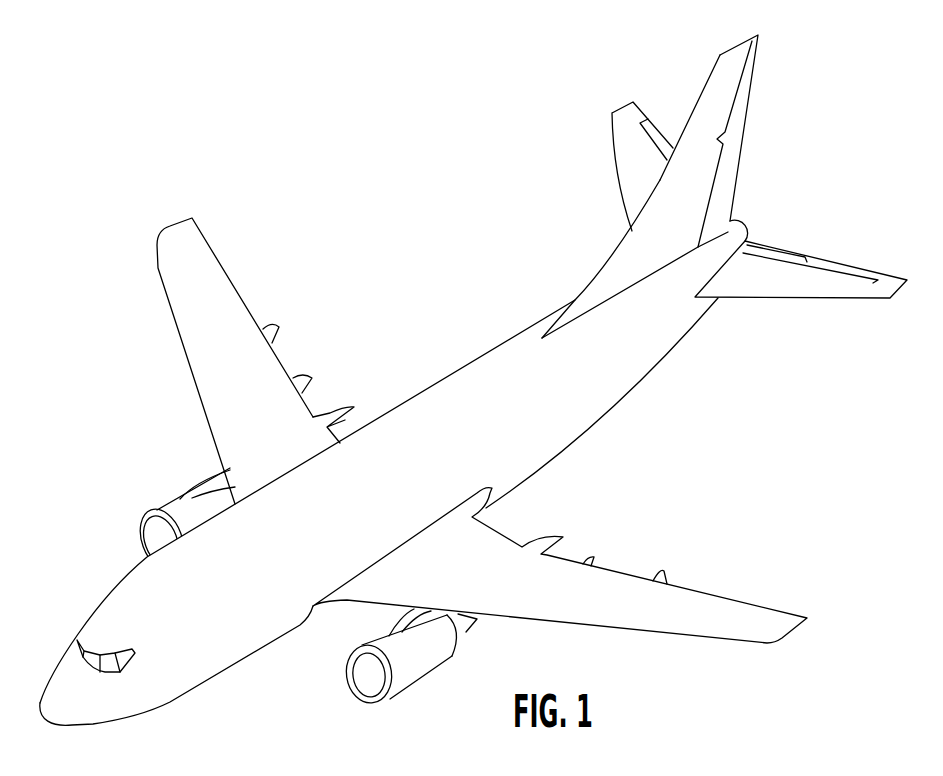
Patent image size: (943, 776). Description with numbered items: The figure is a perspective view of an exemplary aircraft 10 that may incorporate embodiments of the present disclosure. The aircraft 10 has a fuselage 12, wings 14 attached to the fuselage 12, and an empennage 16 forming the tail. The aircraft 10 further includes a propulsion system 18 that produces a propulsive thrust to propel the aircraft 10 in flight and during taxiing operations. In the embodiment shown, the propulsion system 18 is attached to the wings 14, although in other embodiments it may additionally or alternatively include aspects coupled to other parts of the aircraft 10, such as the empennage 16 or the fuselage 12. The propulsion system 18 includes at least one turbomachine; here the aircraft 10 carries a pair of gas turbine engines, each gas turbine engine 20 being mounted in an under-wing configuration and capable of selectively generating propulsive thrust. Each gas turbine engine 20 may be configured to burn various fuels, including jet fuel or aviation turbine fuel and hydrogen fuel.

The aircraft 10 is at (473, 380).
The fuselage 12 is at (530, 458).
The wings 14 is at (165, 269).
The empennage 16 is at (764, 156).
The propulsion system 18 is at (292, 559).
The gas turbine engine 20 is at (168, 497).